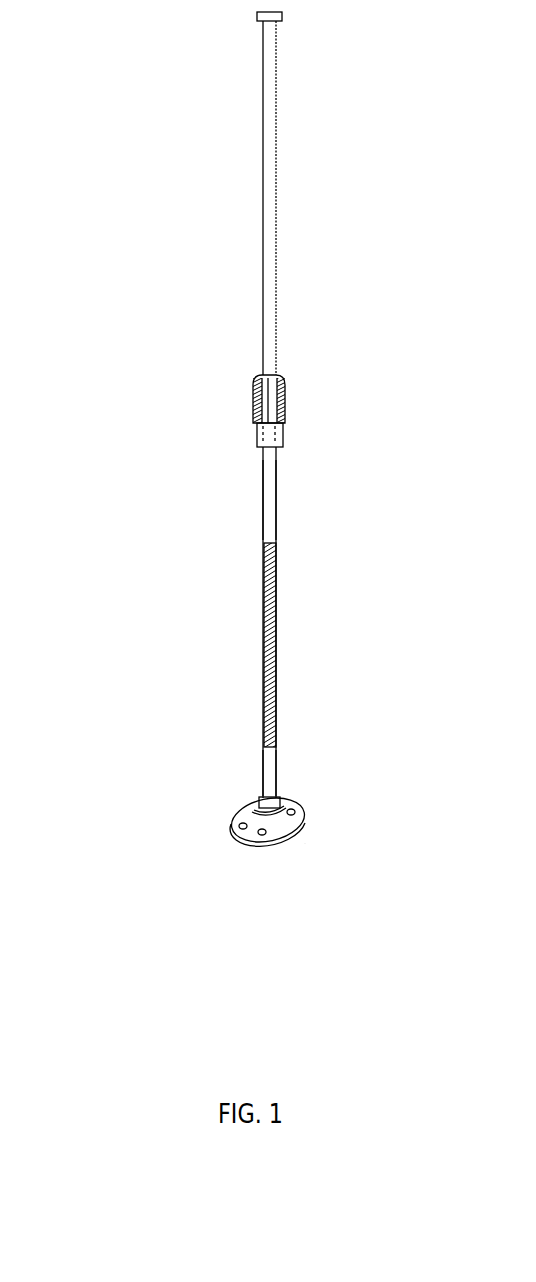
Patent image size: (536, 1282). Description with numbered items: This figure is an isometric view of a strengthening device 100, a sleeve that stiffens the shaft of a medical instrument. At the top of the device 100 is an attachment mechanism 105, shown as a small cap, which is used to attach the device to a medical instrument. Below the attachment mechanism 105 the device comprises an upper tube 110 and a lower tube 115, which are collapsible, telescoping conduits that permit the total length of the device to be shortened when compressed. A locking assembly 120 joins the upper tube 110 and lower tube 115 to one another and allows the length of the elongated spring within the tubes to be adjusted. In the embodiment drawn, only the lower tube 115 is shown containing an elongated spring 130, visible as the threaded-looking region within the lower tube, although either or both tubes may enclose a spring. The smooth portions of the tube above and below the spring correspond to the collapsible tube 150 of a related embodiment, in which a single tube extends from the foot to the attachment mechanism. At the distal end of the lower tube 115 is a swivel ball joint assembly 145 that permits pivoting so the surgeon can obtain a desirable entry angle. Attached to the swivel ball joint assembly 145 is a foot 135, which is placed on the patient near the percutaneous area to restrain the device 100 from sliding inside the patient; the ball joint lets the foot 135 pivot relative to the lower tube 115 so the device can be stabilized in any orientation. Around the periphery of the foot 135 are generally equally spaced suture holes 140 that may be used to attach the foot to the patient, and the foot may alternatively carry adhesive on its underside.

The strengthening device 100 is at (166, 51).
The attachment mechanism 105 is at (258, 17).
The upper tube 110 is at (300, 21).
The lower tube 115 is at (303, 447).
The locking assembly 120 is at (253, 417).
The elongated spring 130 is at (262, 650).
The foot 135 is at (300, 830).
The suture holes 140 is at (300, 813).
The swivel ball joint assembly 145 is at (248, 808).
The collapsible tube 150 is at (262, 510).